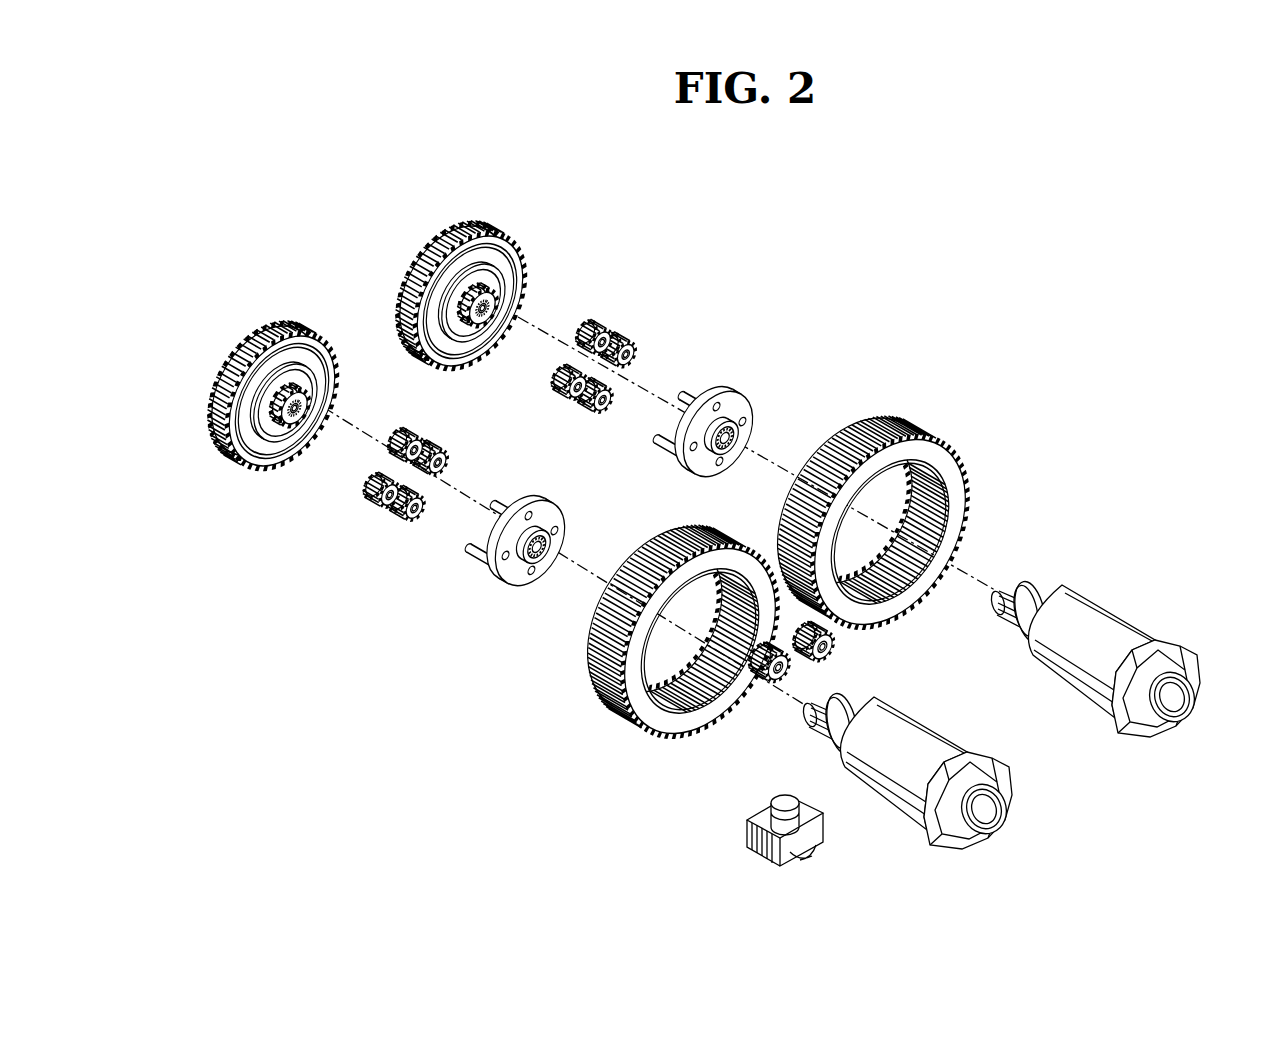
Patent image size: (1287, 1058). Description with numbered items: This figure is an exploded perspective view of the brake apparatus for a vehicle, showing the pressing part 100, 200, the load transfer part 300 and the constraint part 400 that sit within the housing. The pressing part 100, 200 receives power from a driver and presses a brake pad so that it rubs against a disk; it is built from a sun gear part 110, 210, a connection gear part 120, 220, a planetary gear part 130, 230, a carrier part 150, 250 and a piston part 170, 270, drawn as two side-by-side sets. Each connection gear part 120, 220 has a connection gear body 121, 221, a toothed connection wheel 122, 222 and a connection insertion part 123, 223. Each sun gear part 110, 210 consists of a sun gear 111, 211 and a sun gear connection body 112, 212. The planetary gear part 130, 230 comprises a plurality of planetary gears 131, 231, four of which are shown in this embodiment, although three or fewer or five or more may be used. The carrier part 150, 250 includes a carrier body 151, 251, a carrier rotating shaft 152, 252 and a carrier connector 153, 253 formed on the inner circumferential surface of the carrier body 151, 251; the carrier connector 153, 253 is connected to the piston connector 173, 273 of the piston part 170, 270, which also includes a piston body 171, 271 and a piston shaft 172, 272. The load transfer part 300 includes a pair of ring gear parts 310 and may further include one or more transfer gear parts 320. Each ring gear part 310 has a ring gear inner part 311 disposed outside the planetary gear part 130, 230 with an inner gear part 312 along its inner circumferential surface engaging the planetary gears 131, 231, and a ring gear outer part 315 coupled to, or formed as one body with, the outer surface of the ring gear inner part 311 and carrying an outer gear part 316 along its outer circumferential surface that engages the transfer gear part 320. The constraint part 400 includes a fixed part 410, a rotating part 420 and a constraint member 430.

The pressing part 100 is at (598, 328).
The sun gear part 110 is at (527, 289).
The sun gear 111 is at (485, 278).
The sun gear connection body 112 is at (515, 238).
The connection gear part 120 is at (474, 291).
The connection gear body 121 is at (433, 317).
The connection wheel 122 is at (472, 218).
The connection insertion part 123 is at (463, 342).
The planetary gear part 130 is at (638, 338).
The planetary gear 131 is at (640, 328).
The carrier part 150 is at (745, 414).
The carrier body 151 is at (743, 408).
The carrier rotating shaft 152 is at (690, 390).
The carrier connector 153 is at (740, 433).
The piston part 170 is at (1102, 635).
The piston body 171 is at (1145, 635).
The piston shaft 172 is at (1033, 592).
The piston connector 173 is at (997, 618).
The pressing part 200 is at (408, 413).
The sun gear part 210 is at (333, 382).
The sun gear 211 is at (298, 403).
The sun gear connection body 212 is at (310, 360).
The connection gear part 220 is at (268, 383).
The connection gear body 221 is at (248, 437).
The connection wheel 222 is at (263, 340).
The connection insertion part 223 is at (263, 457).
The planetary gear part 230 is at (375, 495).
The planetary gear 231 is at (373, 518).
The carrier part 250 is at (552, 522).
The carrier body 251 is at (553, 518).
The carrier rotating shaft 252 is at (503, 497).
The carrier connector 253 is at (550, 547).
The piston part 270 is at (929, 772).
The piston body 271 is at (890, 800).
The piston shaft 272 is at (857, 693).
The piston connector 273 is at (803, 714).
The load transfer part 300 is at (777, 582).
The ring gear part 310 is at (803, 582).
The ring gear inner part 311 is at (830, 447).
The inner gear part 312 is at (900, 587).
The ring gear outer part 315 is at (965, 523).
The outer gear part 316 is at (967, 495).
The transfer gear part 320 is at (832, 655).
The constraint part 400 is at (721, 837).
The fixed part 410 is at (757, 838).
The rotating part 420 is at (797, 857).
The constraint member 430 is at (785, 802).